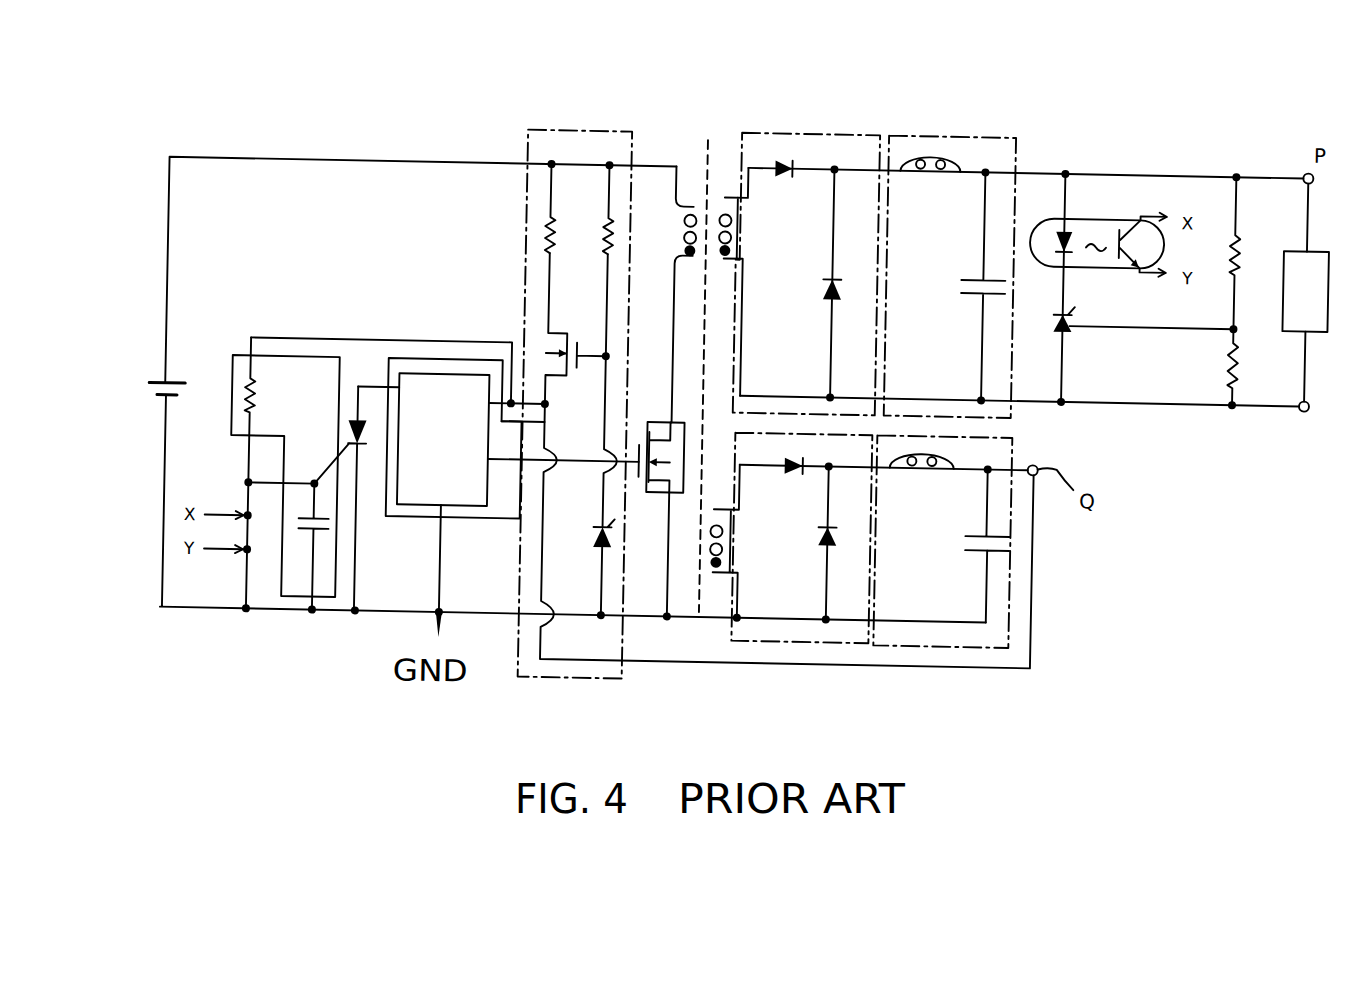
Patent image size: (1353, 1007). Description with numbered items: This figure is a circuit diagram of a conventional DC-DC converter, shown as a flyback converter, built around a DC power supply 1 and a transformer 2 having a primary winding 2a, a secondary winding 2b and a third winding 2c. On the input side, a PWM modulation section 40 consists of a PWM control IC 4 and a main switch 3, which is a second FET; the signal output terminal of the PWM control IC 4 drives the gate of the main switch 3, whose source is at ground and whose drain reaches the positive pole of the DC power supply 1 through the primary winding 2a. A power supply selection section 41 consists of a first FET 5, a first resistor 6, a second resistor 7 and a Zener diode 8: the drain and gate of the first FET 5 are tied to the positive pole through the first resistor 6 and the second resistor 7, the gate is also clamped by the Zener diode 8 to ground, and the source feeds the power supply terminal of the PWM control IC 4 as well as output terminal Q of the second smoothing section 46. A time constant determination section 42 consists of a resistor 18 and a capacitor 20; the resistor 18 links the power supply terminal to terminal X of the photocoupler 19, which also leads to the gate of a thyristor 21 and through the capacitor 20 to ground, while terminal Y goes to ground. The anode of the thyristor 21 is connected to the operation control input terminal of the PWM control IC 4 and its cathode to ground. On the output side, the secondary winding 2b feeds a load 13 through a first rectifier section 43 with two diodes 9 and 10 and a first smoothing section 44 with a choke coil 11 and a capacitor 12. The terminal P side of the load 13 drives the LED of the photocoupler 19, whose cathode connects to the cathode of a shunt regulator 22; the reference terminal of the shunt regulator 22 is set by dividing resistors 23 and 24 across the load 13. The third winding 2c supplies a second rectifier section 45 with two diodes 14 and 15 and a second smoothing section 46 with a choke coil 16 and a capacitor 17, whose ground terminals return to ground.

The DC power supply 1 is at (143, 404).
The transformer 2 is at (704, 150).
The primary winding 2a is at (680, 228).
The secondary winding 2b is at (744, 244).
The third winding 2c is at (743, 559).
The main switch 3 is at (652, 421).
The PWM control IC 4 is at (415, 512).
The first FET 5 is at (578, 335).
The first resistor 6 is at (544, 241).
The second resistor 7 is at (610, 236).
The Zener diode 8 is at (591, 548).
The diode 9 is at (784, 180).
The diode 10 is at (838, 295).
The choke coil 11 is at (929, 178).
The capacitor 12 is at (960, 287).
The load 13 is at (1314, 321).
The diode 14 is at (782, 466).
The diode 15 is at (816, 550).
The choke coil 16 is at (925, 469).
The capacitor 17 is at (961, 539).
The resistor 18 is at (260, 408).
The photocoupler 19 is at (1061, 213).
The capacitor 20 is at (300, 545).
The thyristor 21 is at (360, 387).
The shunt regulator 22 is at (1056, 330).
The dividing resistor 23 is at (1235, 248).
The dividing resistor 24 is at (1222, 362).
The PWM modulation section 40 is at (483, 524).
The power supply selection section 41 is at (552, 683).
The time constant determination section 42 is at (232, 417).
The first rectifier section 43 is at (817, 132).
The first smoothing section 44 is at (968, 131).
The second rectifier section 45 is at (736, 633).
The second smoothing section 46 is at (1013, 446).